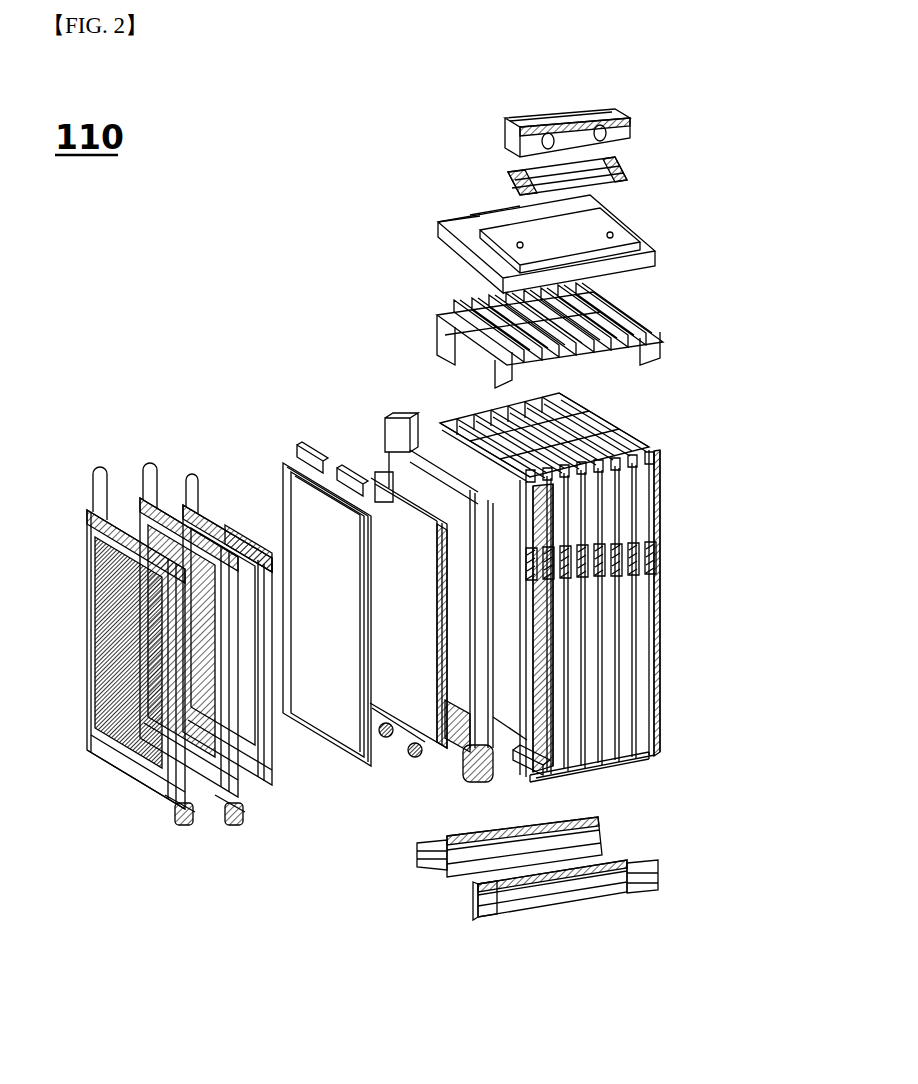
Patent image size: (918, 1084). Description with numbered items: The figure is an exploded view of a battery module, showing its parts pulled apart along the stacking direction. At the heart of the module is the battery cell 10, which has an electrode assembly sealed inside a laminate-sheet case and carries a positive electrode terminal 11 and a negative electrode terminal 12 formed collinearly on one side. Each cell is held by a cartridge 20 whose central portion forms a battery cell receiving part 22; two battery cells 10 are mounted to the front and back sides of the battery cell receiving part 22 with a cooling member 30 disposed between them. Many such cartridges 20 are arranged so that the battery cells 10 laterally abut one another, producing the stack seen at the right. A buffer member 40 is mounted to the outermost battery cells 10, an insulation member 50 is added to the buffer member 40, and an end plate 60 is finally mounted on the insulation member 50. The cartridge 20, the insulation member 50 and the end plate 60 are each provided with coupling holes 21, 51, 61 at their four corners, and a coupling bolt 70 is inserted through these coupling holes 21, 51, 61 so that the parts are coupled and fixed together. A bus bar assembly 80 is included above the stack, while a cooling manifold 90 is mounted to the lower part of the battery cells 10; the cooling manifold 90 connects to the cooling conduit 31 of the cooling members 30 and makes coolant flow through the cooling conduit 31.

The battery cell 10 is at (278, 517).
The positive electrode terminal 11 is at (298, 452).
The negative electrode terminal 12 is at (337, 478).
The cartridge 20 is at (406, 420).
The coupling hole 21 is at (472, 784).
The battery cell receiving part 22 is at (457, 670).
The cooling member 30 is at (360, 476).
The cooling conduit 31 is at (413, 758).
The buffer member 40 is at (187, 505).
The insulation member 50 is at (127, 492).
The coupling hole 51 is at (233, 826).
The end plate 60 is at (90, 503).
The coupling hole 61 is at (183, 826).
The coupling bolt 70 is at (525, 768).
The bus bar assembly 80 is at (670, 278).
The cooling manifold 90 is at (625, 855).